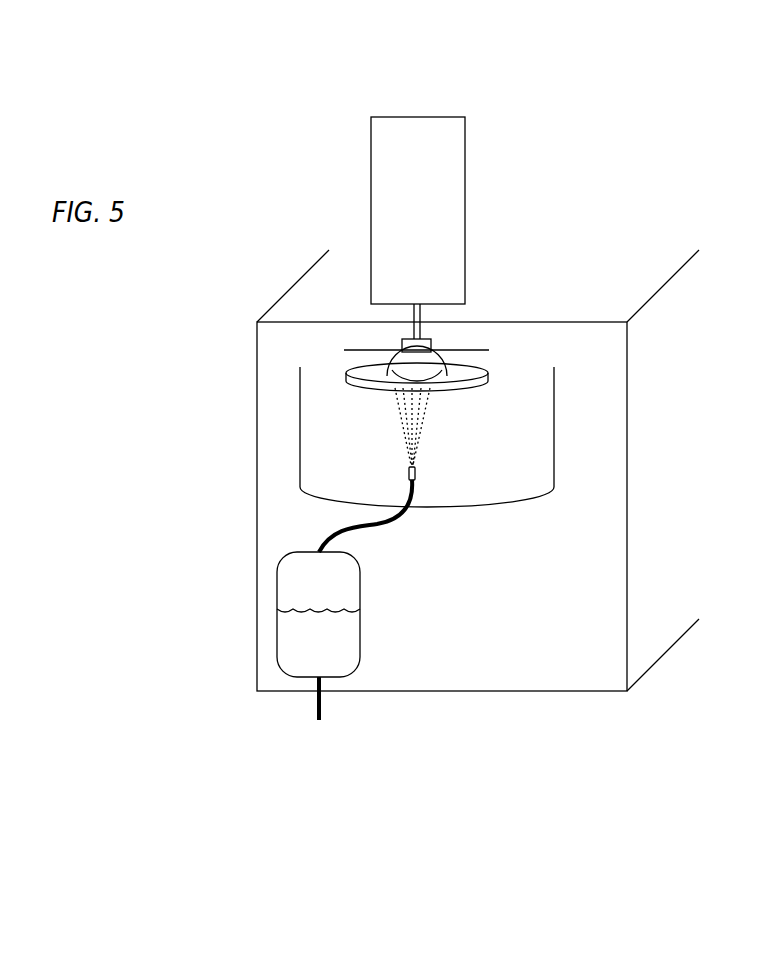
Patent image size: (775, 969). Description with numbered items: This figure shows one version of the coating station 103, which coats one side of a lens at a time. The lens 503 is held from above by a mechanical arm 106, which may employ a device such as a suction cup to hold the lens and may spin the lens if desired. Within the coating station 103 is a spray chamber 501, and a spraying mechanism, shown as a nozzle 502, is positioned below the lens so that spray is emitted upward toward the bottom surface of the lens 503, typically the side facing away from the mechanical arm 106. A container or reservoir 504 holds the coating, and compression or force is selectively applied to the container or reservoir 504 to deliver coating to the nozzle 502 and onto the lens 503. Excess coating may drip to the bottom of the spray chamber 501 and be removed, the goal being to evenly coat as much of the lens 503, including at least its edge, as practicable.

The coating station 103 is at (513, 727).
The mechanical arm 106 is at (387, 60).
The spray chamber 501 is at (290, 436).
The nozzle 502 is at (428, 470).
The lens 503 is at (498, 371).
The container or reservoir 504 is at (268, 622).